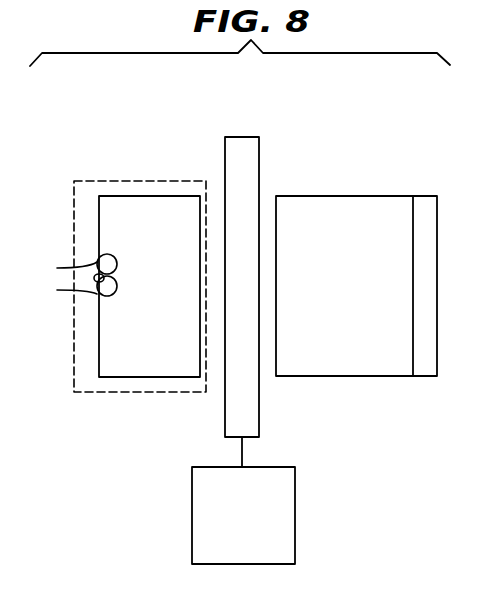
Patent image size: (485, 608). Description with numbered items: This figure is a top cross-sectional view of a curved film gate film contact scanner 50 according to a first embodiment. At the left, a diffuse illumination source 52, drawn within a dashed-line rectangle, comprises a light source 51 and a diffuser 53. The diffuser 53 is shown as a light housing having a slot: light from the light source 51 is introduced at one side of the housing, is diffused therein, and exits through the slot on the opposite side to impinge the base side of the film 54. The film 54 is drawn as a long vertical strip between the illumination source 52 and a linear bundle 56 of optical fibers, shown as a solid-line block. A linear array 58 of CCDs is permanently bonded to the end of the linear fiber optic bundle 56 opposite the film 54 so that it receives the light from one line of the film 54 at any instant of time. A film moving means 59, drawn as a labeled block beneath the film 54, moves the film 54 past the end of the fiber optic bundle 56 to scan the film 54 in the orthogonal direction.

The film contact scanner 50 is at (312, 95).
The light source 51 is at (104, 254).
The diffuse illumination source 52 is at (183, 181).
The diffuser 53 is at (110, 196).
The film 54 is at (236, 136).
The linear bundle of optical fibers 56 is at (318, 200).
The linear array of CCDs 58 is at (426, 200).
The film moving means 59 is at (192, 497).